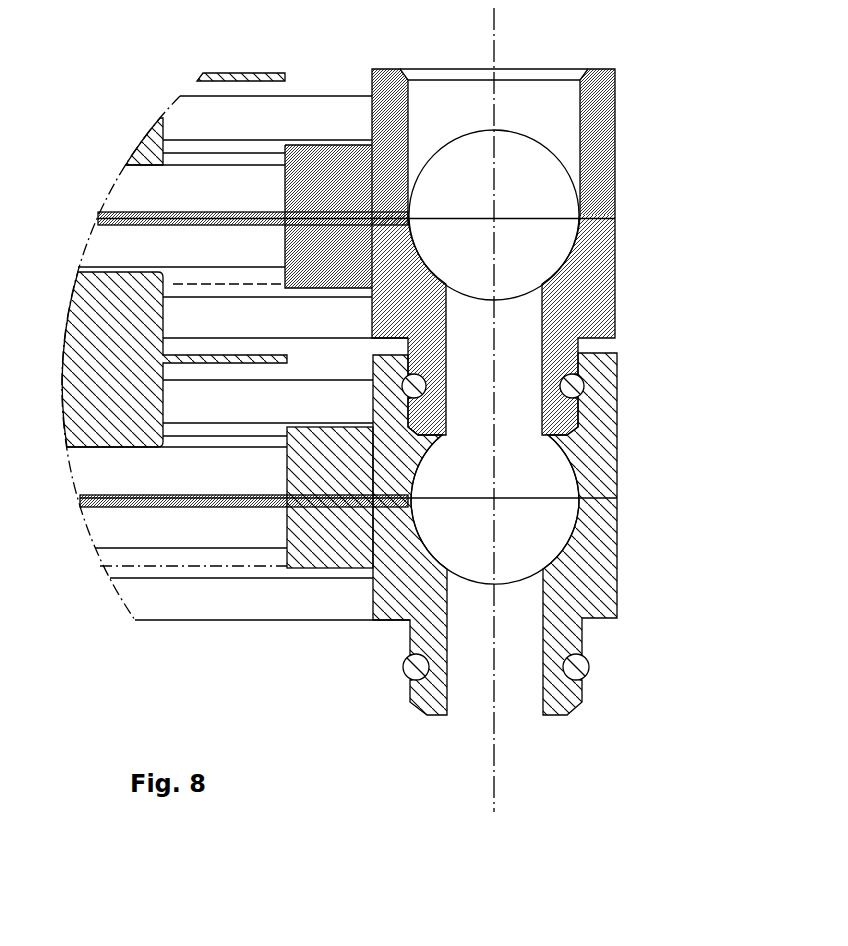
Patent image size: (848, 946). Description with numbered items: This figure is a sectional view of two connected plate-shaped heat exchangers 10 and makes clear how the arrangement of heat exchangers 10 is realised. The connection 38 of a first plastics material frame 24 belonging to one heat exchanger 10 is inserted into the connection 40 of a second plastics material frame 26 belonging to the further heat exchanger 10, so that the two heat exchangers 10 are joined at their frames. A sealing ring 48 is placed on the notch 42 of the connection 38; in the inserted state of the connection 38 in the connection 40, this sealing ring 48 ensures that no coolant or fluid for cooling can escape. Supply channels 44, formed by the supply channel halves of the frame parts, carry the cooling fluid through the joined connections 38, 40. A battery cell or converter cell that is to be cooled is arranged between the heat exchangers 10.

The heat exchanger 10 is at (634, 178).
The first plastics material frame 24 is at (303, 243).
The second plastics material frame 26 is at (342, 177).
The connection 38 is at (577, 427).
The connection 40 is at (607, 68).
The notch 42 is at (563, 377).
The supply channel 44 is at (472, 159).
The sealing ring 48 is at (577, 380).